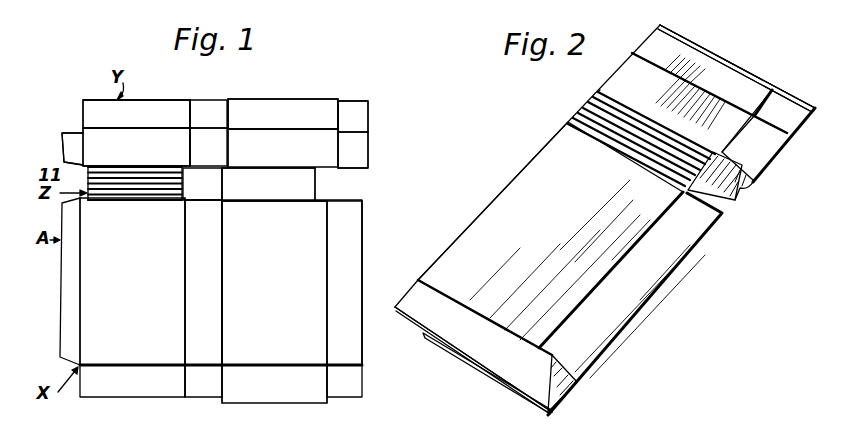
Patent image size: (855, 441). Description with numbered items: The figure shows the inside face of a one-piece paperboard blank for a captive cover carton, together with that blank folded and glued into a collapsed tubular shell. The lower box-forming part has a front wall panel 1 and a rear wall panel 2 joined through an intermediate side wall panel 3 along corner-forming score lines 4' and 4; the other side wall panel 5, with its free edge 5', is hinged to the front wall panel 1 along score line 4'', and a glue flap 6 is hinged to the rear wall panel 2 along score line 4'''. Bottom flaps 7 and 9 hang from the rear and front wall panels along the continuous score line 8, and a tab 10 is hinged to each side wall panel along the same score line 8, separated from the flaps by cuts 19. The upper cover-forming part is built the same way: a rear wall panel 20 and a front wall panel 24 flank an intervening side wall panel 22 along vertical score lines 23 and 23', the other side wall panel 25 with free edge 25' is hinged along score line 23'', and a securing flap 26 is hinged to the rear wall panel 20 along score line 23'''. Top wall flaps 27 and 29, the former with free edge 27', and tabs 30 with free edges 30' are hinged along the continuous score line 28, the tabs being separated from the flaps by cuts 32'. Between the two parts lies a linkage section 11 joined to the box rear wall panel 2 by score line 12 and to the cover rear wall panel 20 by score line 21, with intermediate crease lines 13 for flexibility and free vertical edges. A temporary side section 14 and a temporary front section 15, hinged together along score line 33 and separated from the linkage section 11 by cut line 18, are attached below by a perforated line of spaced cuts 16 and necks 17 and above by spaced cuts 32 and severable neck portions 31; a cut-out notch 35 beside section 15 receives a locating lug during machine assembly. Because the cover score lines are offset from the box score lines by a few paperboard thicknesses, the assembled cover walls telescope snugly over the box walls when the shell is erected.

In FIG. 1, the front wall panel 1 is at (274, 283).
In FIG. 1, the rear wall panel 2 is at (132, 281).
In FIG. 2, the rear wall panel 2 is at (550, 235).
In FIG. 1, the intermediate side wall panel 3 is at (203, 282).
In FIG. 1, the corner-forming score line 4 is at (170, 281).
In FIG. 1, the corner-forming score line 4' is at (243, 283).
In FIG. 1, the score line 4'' is at (306, 283).
In FIG. 1, the score line 4''' is at (109, 281).
In FIG. 1, the side wall panel 5 is at (344, 283).
In FIG. 2, the side wall panel 5 is at (630, 303).
In FIG. 1, the free edge 5' is at (378, 283).
In FIG. 1, the glue flap 6 is at (70, 281).
In FIG. 1, the bottom flap 7 is at (132, 381).
In FIG. 2, the bottom flap 7 is at (473, 347).
In FIG. 1, the score line 8 is at (137, 365).
In FIG. 1, the bottom flap 9 is at (274, 384).
In FIG. 2, the bottom flap 9 is at (552, 414).
In FIG. 1, the tab 10 is at (273, 381).
In FIG. 2, the tab 10 is at (423, 335).
In FIG. 1, the linkage section 11 is at (66, 177).
In FIG. 2, the linkage section 11 is at (630, 108).
In FIG. 1, the score line 12 is at (110, 201).
In FIG. 2, the score line 12 is at (638, 159).
In FIG. 1, the intermediate crease or score lines 13 is at (133, 182).
In FIG. 2, the intermediate crease or score lines 13 is at (598, 131).
In FIG. 1, the temporary side section 14 is at (218, 175).
In FIG. 2, the temporary side section 14 is at (574, 116).
In FIG. 1, the temporary front section 15 is at (268, 184).
In FIG. 2, the temporary front section 15 is at (720, 209).
In FIG. 1, the spaced cuts 16 is at (253, 202).
In FIG. 1, the connecting necks 17 is at (203, 201).
In FIG. 1, the cut line 18 is at (148, 201).
In FIG. 2, the cut line 18 is at (594, 94).
In FIG. 1, the cuts 19 is at (184, 379).
In FIG. 2, the cuts 19 is at (527, 394).
In FIG. 1, the rear wall panel 20 is at (136, 147).
In FIG. 2, the rear wall panel 20 is at (707, 93).
In FIG. 1, the score line 21 is at (116, 159).
In FIG. 1, the intervening side wall panel 22 is at (208, 147).
In FIG. 1, the vertical score line 23 is at (173, 147).
In FIG. 2, the vertical score line 23 is at (596, 74).
In FIG. 1, the vertical score line 23' is at (245, 148).
In FIG. 1, the score line 23'' is at (317, 150).
In FIG. 1, the score line 23''' is at (58, 135).
In FIG. 1, the front wall panel 24 is at (283, 148).
In FIG. 2, the front wall panel 24 is at (661, 118).
In FIG. 1, the side wall panel 25 is at (352, 150).
In FIG. 2, the side wall panel 25 is at (743, 147).
In FIG. 1, the vertical free edge 25' is at (380, 150).
In FIG. 1, the securing flap 26 is at (65, 148).
In FIG. 2, the securing flap 26 is at (731, 186).
In FIG. 1, the top wall flap 27 is at (136, 114).
In FIG. 2, the top wall flap 27 is at (736, 68).
In FIG. 1, the free edge 27' is at (124, 83).
In FIG. 1, the score line 28 is at (106, 128).
In FIG. 2, the score line 28 is at (733, 106).
In FIG. 1, the top wall flap 29 is at (283, 114).
In FIG. 2, the top wall flap 29 is at (730, 61).
In FIG. 1, the tab 30 is at (303, 116).
In FIG. 2, the tab 30 is at (784, 136).
In FIG. 1, the free edge 30' is at (381, 103).
In FIG. 1, the severable neck portions 31 is at (247, 168).
In FIG. 1, the spaced cuts 32 is at (300, 184).
In FIG. 1, the cuts 32' is at (270, 99).
In FIG. 2, the cuts 32' is at (767, 105).
In FIG. 1, the vertically extending score line 33 is at (221, 186).
In FIG. 1, the cut-out notch 35 is at (318, 184).